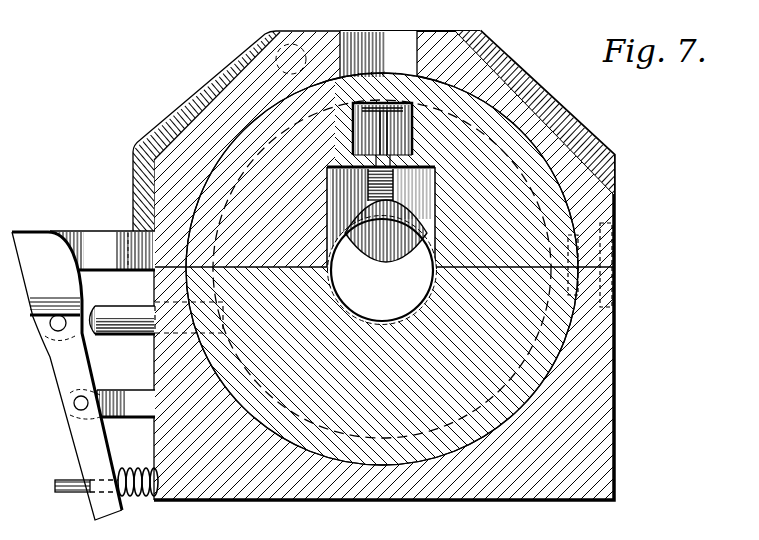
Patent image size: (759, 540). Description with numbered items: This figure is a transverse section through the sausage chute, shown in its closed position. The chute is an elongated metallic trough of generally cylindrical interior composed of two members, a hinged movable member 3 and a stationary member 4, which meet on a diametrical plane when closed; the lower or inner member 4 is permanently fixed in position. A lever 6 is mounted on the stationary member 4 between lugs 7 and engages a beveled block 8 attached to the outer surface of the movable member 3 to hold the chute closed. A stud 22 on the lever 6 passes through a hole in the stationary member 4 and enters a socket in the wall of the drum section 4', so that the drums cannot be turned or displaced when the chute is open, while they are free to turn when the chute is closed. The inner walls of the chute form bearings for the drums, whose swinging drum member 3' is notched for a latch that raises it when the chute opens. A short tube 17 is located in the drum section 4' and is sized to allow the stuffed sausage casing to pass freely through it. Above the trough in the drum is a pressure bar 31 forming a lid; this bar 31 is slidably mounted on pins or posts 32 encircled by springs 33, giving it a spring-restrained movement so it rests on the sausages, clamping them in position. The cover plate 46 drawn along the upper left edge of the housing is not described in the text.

The stationary chute member 4 is at (407, 265).
The cover plate 46 is at (185, 112).
The hinged movable chute member 3 is at (420, 269).
The drum member 3' is at (424, 269).
The drum section 4' is at (619, 270).
The pins or posts 32 is at (480, 32).
The springs 33 is at (455, 125).
The pressure bar 31 is at (390, 217).
The short tube 17 is at (368, 258).
The beveled block 8 is at (65, 232).
The stud 22 is at (103, 307).
The lugs 7 is at (110, 387).
The lever 6 is at (62, 363).